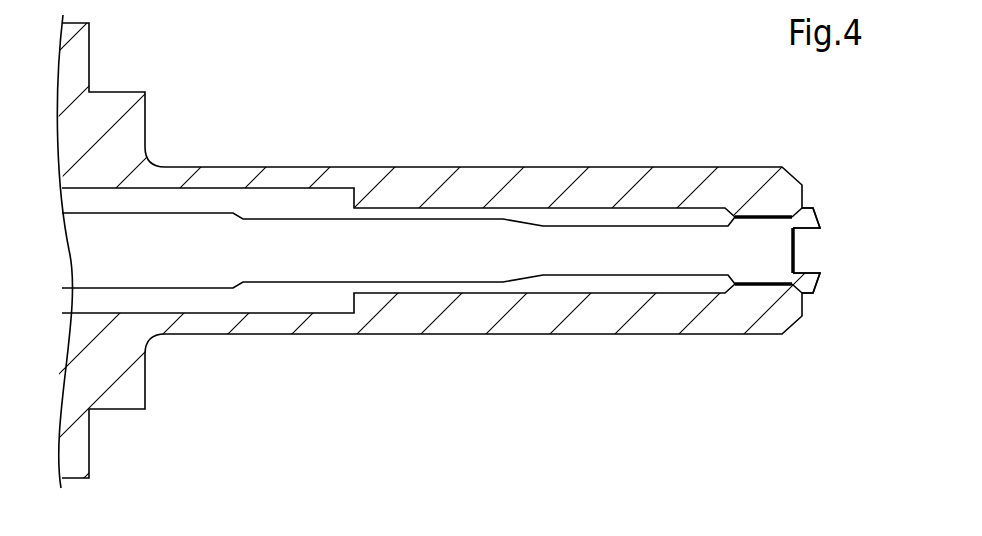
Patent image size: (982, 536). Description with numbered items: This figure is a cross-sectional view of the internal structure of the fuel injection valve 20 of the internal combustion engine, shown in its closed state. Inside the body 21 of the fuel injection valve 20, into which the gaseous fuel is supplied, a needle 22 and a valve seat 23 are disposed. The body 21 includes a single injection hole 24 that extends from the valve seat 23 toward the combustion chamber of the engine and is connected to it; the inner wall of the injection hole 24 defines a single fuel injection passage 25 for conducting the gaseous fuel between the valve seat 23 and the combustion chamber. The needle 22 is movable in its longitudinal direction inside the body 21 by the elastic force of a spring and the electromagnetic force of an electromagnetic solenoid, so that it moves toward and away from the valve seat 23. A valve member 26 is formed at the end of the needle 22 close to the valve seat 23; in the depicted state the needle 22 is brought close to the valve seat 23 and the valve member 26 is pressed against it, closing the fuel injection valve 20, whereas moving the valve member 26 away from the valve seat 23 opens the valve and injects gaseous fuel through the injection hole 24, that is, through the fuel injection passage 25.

The fuel injection valve 20 is at (407, 168).
The body 21 is at (118, 102).
The needle 22 is at (297, 230).
The valve seat 23 is at (772, 215).
The injection hole 24 is at (813, 264).
The fuel injection passage 25 is at (813, 230).
The valve member 26 is at (762, 284).